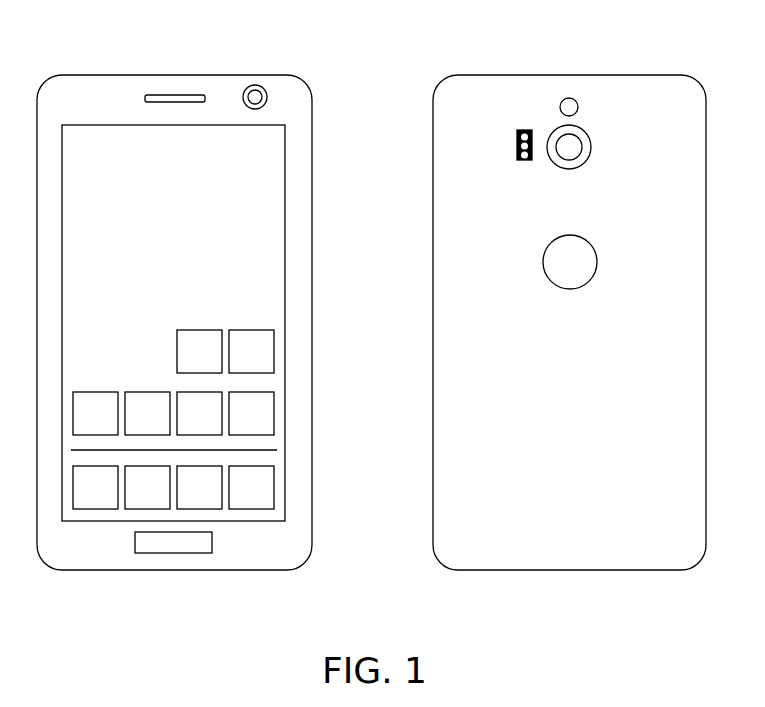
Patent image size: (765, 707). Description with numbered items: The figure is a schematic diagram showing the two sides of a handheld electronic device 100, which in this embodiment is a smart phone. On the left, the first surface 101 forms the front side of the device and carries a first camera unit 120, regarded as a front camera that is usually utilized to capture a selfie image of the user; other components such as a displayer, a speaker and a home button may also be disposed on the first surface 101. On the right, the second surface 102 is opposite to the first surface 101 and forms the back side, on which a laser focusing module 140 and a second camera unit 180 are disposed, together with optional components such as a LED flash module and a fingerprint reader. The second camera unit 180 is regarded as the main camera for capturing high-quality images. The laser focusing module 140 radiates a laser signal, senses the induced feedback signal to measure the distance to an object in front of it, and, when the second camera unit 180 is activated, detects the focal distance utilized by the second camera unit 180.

The handheld electronic device 100 is at (82, 41).
The first surface 101 is at (105, 108).
The second surface 102 is at (495, 110).
The first camera unit 120 is at (263, 86).
The laser focusing module 140 is at (573, 97).
The second camera unit 180 is at (591, 150).